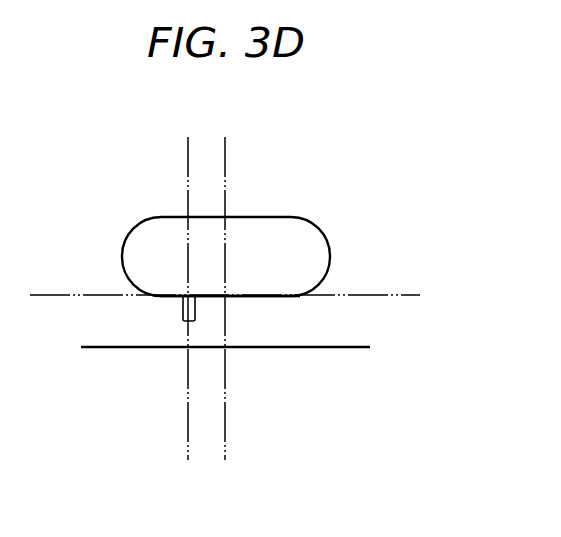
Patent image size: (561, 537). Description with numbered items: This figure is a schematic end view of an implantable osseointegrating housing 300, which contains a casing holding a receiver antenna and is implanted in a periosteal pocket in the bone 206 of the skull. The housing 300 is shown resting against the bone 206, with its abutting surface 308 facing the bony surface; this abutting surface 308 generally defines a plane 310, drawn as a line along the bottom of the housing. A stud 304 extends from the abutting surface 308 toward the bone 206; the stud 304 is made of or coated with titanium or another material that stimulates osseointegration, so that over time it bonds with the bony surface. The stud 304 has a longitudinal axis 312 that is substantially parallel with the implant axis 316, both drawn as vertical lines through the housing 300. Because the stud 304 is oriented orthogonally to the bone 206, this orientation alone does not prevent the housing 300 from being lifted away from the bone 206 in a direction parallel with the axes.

The implantable osseointegrating housing 300 is at (305, 218).
The stud 304 is at (183, 310).
The abutting surface 308 is at (271, 297).
The plane 310 is at (398, 295).
The longitudinal axis 312 is at (188, 170).
The implant axis 316 is at (225, 160).
The bone 206 is at (312, 347).